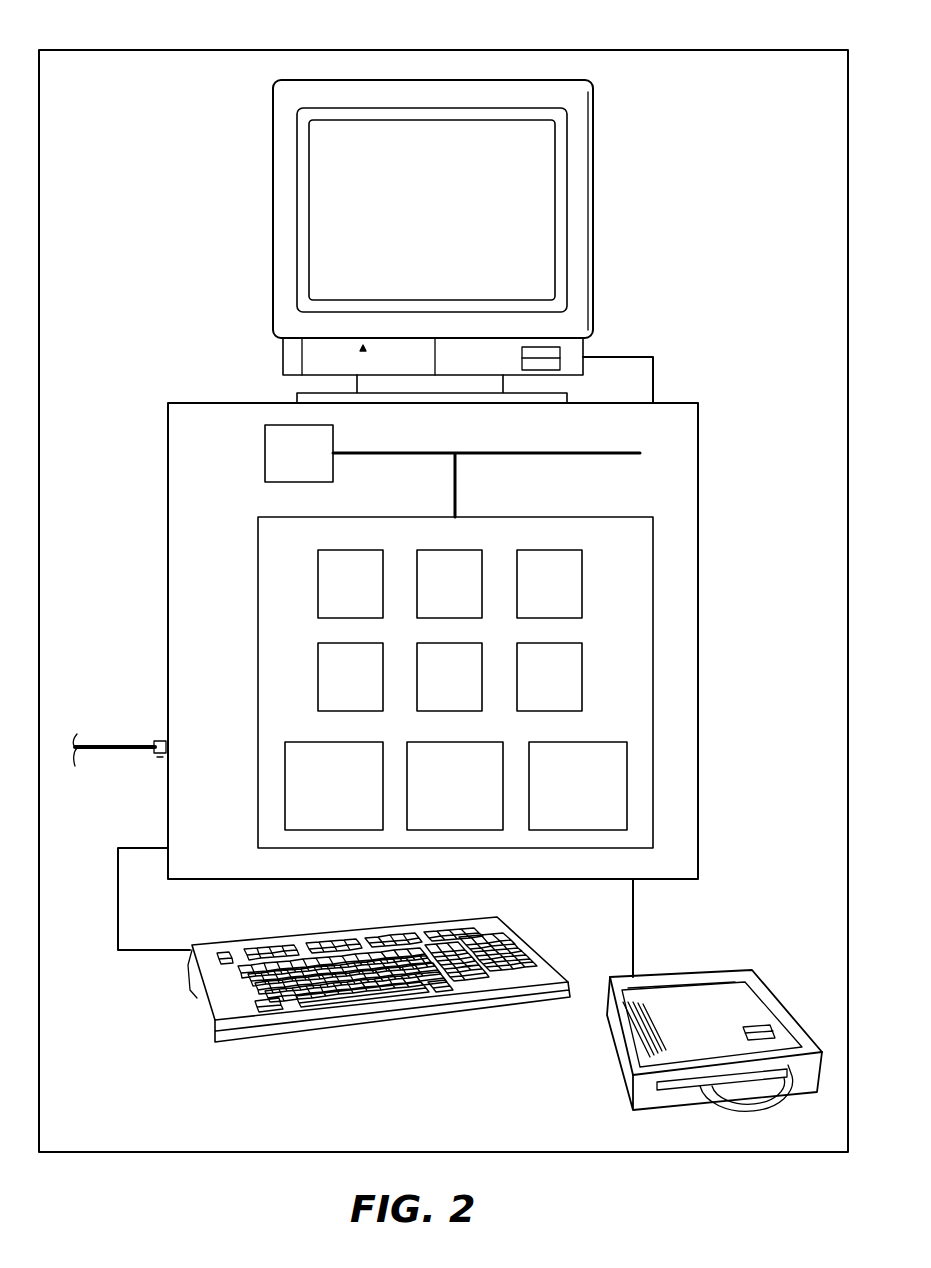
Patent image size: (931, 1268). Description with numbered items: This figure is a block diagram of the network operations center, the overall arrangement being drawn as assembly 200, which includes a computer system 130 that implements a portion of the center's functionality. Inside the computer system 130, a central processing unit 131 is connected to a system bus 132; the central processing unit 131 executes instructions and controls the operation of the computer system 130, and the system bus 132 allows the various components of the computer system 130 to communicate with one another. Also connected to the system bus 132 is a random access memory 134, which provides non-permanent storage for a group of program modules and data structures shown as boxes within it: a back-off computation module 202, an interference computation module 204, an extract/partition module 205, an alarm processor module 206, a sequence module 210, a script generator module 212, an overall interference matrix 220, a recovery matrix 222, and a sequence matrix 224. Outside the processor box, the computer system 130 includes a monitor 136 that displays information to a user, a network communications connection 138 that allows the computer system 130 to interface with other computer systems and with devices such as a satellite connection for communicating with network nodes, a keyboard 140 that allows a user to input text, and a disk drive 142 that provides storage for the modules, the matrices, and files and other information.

The computer system 200 is at (137, 46).
The computer system 130 is at (160, 515).
The central processing unit 131 is at (265, 449).
The system bus 132 is at (492, 453).
The random access memory 134 is at (258, 557).
The monitor 136 is at (588, 237).
The network communications connection 138 is at (108, 744).
The keyboard 140 is at (284, 1036).
The disk drive 142 is at (617, 1081).
The back-off computation module 202 is at (329, 597).
The interference computation module 204 is at (428, 597).
The extract/partition module 205 is at (528, 597).
The alarm processor module 206 is at (329, 688).
The sequence module 210 is at (428, 688).
The script generator module 212 is at (528, 688).
The overall interference matrix 220 is at (310, 795).
The recovery matrix 222 is at (432, 795).
The sequence matrix 224 is at (554, 795).